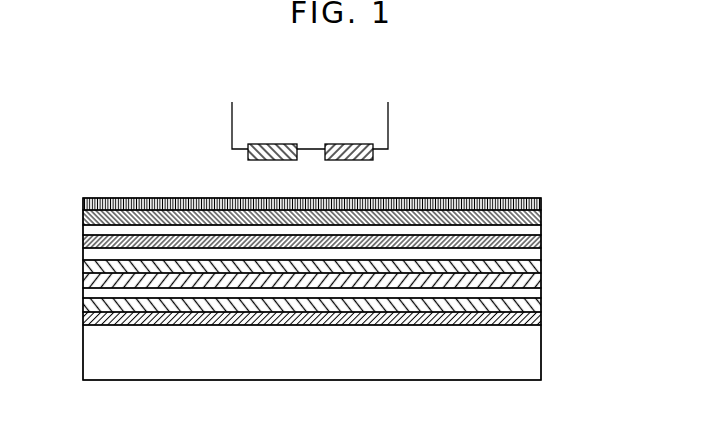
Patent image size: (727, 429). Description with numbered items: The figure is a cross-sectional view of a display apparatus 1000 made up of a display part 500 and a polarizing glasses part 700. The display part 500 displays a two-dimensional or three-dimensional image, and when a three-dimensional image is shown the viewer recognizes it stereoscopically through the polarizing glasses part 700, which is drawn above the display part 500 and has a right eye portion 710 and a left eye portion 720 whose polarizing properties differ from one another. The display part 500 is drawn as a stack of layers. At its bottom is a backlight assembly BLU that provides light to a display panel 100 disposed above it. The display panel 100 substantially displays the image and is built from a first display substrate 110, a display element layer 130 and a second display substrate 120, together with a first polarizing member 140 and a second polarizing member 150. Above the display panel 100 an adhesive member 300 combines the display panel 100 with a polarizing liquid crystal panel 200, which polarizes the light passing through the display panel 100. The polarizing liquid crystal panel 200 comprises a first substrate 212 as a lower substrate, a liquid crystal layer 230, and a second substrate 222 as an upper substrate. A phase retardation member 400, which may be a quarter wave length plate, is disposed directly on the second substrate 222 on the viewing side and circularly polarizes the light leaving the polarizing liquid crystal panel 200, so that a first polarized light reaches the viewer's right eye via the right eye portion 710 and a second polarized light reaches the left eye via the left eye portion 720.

The display apparatus 1000 is at (510, 113).
The polarizing glasses part 700 is at (403, 128).
The right eye portion 710 is at (270, 144).
The left eye portion 720 is at (347, 144).
The display part 500 is at (488, 189).
The phase retardation member 400 is at (541, 199).
The polarizing liquid crystal panel 200 is at (607, 190).
The second substrate 222 is at (541, 216).
The liquid crystal layer 230 is at (541, 230).
The first substrate 212 is at (541, 242).
The adhesive member 300 is at (83, 252).
The display panel 100 is at (607, 253).
The second polarizing member 150 is at (541, 266).
The second display substrate 120 is at (541, 281).
The display element layer 130 is at (541, 305).
The first display substrate 110 is at (541, 318).
The first polarizing member 140 is at (541, 332).
The backlight assembly BLU is at (541, 360).